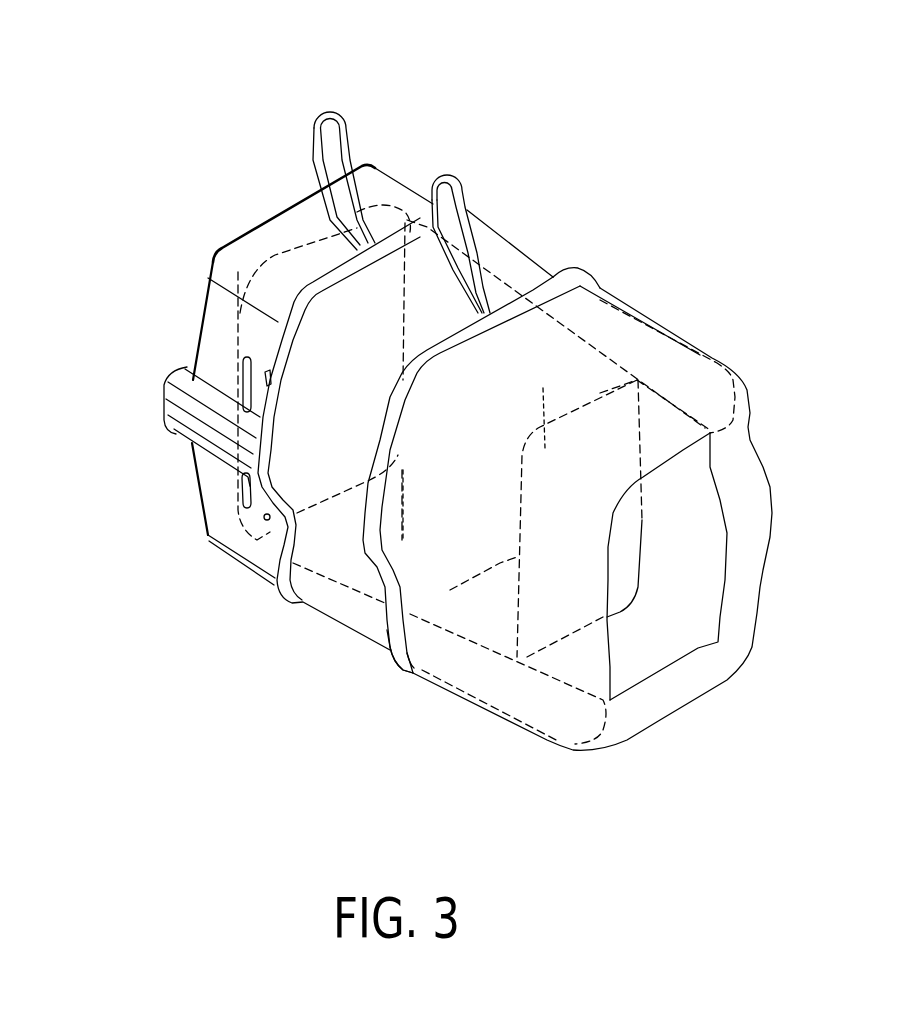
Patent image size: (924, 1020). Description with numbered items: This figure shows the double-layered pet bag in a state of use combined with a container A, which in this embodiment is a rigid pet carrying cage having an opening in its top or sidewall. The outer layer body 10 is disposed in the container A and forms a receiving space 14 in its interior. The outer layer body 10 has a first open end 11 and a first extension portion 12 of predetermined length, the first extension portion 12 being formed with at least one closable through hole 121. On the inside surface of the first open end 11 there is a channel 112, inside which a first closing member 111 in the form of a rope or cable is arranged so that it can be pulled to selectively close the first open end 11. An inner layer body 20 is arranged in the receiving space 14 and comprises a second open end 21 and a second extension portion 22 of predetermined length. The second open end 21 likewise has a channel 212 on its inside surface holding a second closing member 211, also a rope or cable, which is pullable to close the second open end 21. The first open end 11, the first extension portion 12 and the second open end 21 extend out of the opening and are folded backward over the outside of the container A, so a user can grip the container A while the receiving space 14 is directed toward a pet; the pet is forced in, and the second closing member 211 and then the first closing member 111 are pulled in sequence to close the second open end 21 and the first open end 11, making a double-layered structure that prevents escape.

The outer layer body 10 is at (398, 362).
The first open end 11 is at (244, 423).
The first closing member 111 is at (317, 122).
The channel 112 is at (332, 279).
The first extension portion 12 is at (343, 608).
The closable through hole 121 is at (402, 503).
The container A is at (218, 483).
The inner layer body 20 is at (597, 465).
The second open end 21 is at (388, 651).
The second closing member 211 is at (447, 175).
The channel 212 is at (413, 680).
The second extension portion 22 is at (517, 727).
The receiving space 14 is at (687, 547).